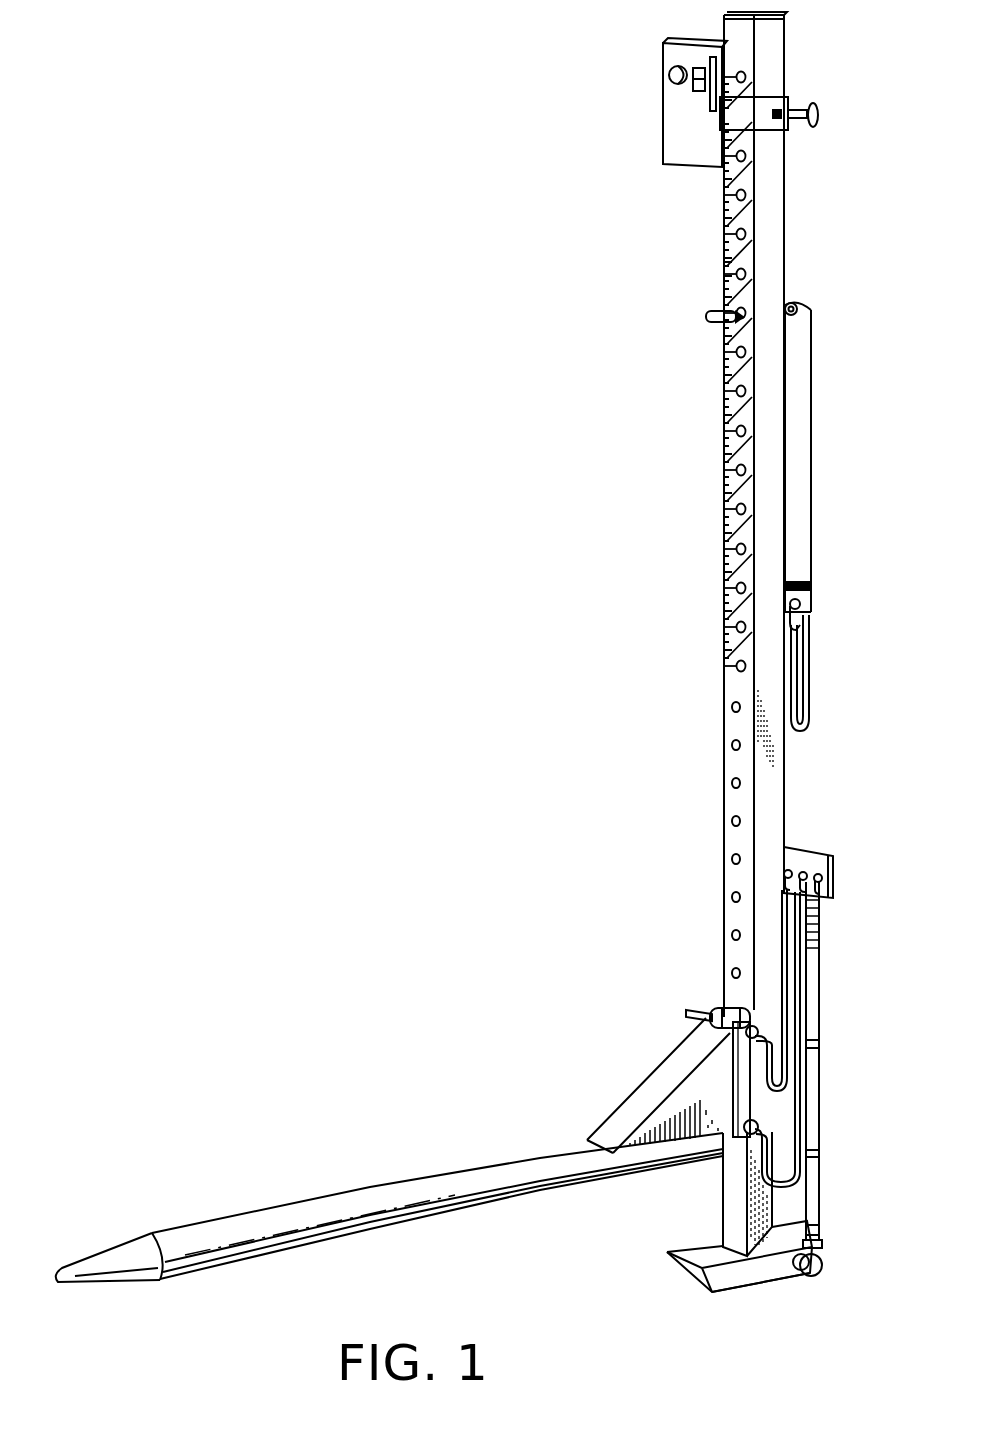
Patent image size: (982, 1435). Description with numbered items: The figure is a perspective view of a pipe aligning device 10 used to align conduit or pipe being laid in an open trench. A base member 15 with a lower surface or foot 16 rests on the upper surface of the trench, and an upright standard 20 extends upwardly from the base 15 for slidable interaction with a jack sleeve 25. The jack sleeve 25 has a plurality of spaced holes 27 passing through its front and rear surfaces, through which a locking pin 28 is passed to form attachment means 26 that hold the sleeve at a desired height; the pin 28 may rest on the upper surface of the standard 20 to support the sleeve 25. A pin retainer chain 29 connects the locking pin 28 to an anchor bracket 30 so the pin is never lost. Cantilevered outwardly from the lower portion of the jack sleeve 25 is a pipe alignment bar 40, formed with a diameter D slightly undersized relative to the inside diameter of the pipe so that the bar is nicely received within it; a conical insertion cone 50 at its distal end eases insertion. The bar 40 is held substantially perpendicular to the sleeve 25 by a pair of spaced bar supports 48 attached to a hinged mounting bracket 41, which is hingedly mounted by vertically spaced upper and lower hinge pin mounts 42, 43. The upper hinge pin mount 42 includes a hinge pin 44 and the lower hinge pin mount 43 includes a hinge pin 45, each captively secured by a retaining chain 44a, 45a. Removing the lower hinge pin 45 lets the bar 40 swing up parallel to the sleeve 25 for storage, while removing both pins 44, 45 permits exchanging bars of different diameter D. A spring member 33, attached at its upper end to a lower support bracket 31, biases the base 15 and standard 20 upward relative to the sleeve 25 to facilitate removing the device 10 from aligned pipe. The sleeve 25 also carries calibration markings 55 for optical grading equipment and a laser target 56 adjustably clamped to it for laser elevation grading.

The pipe aligning device 10 is at (545, 890).
The base member 15 is at (688, 1291).
The foot 16 is at (755, 1283).
The upright standard 20 is at (723, 1222).
The jack sleeve 25 is at (728, 682).
The attachment means 26 is at (704, 325).
The spaced holes 27 is at (728, 470).
The locking pin 28 is at (706, 316).
The pin retainer chain 29 is at (812, 448).
The anchor bracket 30 is at (800, 603).
The lower support bracket 31 is at (802, 870).
The spring member 33 is at (821, 1110).
The pipe alignment bar 40 is at (445, 1180).
The hinged mounting bracket 41 is at (733, 1070).
The upper hinge pin mount 42 is at (725, 1010).
The lower hinge pin mount 43 is at (748, 1094).
The hinge pin 44 is at (686, 1013).
The retaining chain 44a is at (787, 924).
The hinge pin 45 is at (750, 1140).
The retaining chain 45a is at (804, 1190).
The bar supports 48 is at (660, 1115).
The insertion cone 50 is at (128, 1246).
The calibration markings 55 is at (728, 277).
The laser target 56 is at (658, 78).
The diameter D is at (271, 1308).